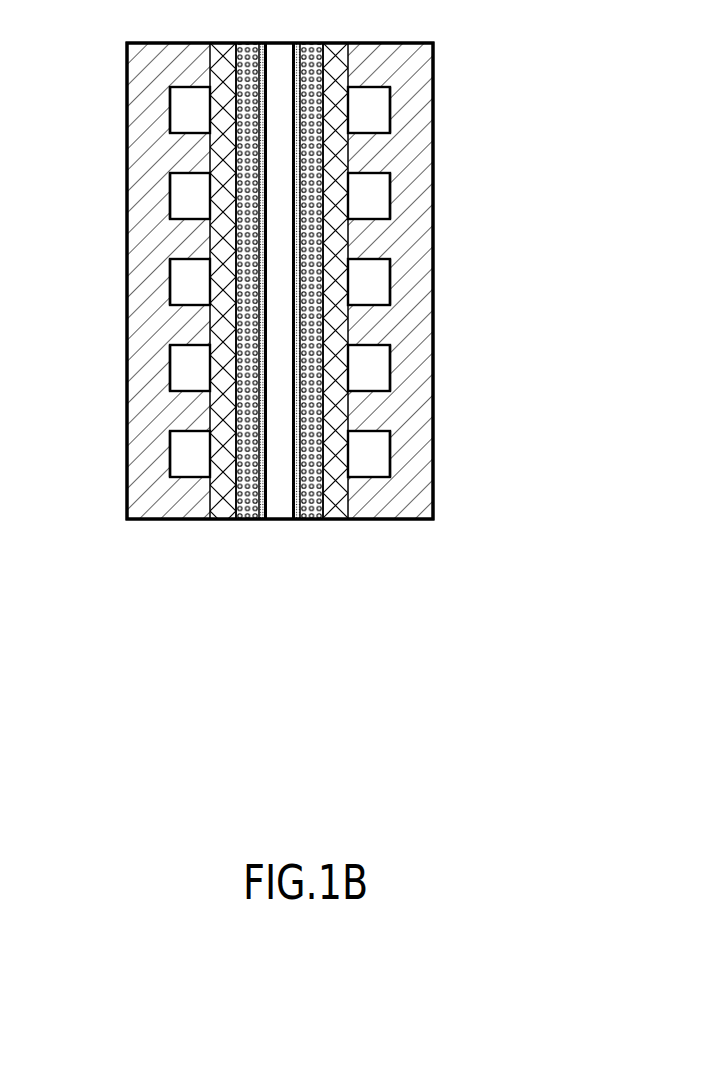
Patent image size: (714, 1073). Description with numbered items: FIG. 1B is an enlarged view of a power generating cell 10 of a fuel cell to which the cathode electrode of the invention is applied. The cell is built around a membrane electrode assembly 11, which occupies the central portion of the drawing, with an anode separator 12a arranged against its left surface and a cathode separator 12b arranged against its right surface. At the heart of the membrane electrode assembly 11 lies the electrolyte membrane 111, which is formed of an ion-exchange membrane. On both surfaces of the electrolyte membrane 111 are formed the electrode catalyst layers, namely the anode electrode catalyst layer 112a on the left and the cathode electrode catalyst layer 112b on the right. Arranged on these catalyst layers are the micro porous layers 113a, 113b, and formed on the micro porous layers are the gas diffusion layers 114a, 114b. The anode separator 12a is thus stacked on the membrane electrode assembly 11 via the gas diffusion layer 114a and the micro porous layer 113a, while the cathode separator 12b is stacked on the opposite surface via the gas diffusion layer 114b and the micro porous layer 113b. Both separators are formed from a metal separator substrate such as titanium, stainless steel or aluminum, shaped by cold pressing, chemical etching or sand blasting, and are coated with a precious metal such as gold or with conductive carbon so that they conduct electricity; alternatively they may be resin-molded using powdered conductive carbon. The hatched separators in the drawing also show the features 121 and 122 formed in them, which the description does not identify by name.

The power generating cell 10 is at (518, 63).
The membrane electrode assembly 11 is at (283, 363).
The electrolyte membrane 111 is at (282, 519).
The anode electrode catalyst layer 112a is at (263, 519).
The cathode electrode catalyst layer 112b is at (297, 519).
The micro porous layer 113a is at (243, 519).
The micro porous layer 113b is at (316, 519).
The gas diffusion layer 114a is at (222, 519).
The gas diffusion layer 114b is at (375, 318).
The anode separator 12a is at (157, 519).
The cathode separator 12b is at (413, 519).
The gas flow channel 121 is at (189, 173).
The channel bottom wall 122 is at (171, 197).